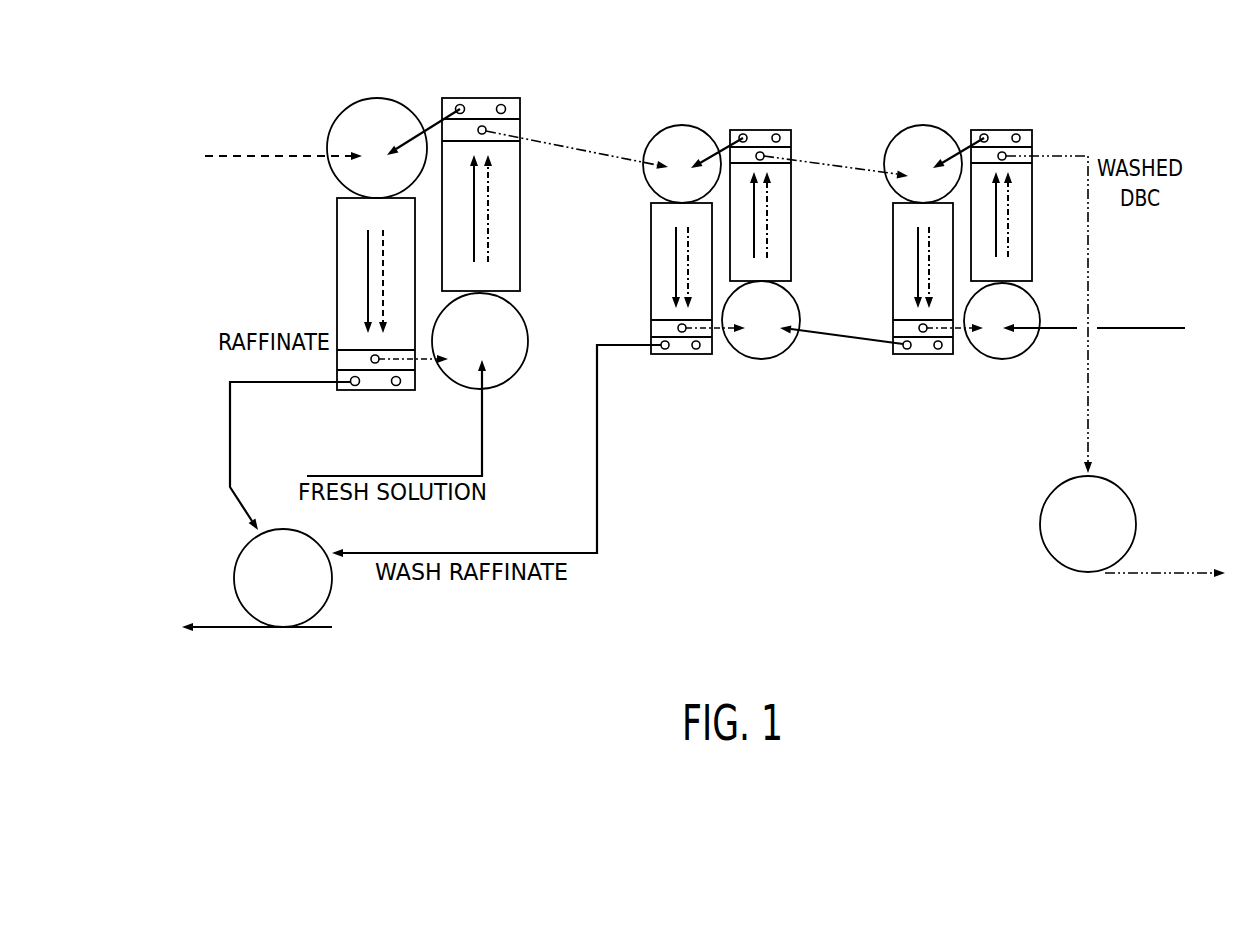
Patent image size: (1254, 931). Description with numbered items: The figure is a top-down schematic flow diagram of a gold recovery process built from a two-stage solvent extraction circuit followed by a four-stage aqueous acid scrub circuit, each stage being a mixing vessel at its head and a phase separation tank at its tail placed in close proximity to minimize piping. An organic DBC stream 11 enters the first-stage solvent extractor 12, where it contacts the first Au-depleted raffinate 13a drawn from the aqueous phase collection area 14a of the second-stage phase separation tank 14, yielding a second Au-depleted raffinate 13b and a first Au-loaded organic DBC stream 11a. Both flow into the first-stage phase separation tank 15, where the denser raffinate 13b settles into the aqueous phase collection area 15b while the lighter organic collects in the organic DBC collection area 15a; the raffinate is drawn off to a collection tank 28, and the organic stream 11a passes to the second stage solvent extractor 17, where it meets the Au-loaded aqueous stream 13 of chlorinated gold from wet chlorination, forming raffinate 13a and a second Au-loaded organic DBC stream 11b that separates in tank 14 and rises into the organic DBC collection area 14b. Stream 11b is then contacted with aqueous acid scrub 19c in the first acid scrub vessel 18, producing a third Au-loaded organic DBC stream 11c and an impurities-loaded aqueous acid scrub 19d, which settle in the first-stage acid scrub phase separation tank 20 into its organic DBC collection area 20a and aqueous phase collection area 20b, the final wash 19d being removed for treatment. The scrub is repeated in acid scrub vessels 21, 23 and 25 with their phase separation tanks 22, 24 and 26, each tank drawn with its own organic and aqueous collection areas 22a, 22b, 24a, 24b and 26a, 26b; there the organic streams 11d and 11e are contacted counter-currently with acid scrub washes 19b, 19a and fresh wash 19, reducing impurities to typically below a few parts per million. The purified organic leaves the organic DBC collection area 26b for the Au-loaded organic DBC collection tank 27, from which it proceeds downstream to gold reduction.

The organic DBC stream 11 is at (248, 155).
The first Au-loaded organic DBC stream 11a is at (382, 302).
The second Au-loaded organic DBC stream 11b is at (548, 141).
The third Au-loaded organic DBC stream 11c is at (687, 290).
The Au-loaded organic DBC stream 11d is at (808, 160).
The Au-loaded organic DBC stream 11e is at (928, 310).
The first-stage solvent extractor 12 is at (352, 103).
The aqueous stream (filtrate) 13 is at (482, 434).
The first Au-depleted raffinate 13a is at (433, 118).
The second Au-depleted raffinate 13b is at (367, 272).
The second-stage phase separation tank 14 is at (521, 170).
The aqueous phase collection area 14a is at (478, 105).
The organic DBC collection area 14b is at (516, 128).
The first-stage phase separation tank 15 is at (337, 220).
The organic DBC collection area 15a is at (372, 390).
The aqueous phase collection area 15b is at (355, 353).
The second stage solvent extractor 17 is at (520, 377).
The first acid scrub vessel 18 is at (681, 125).
The aqueous acid scrub wash 19 is at (1150, 328).
The aqueous acid scrub wash 19a is at (963, 150).
The aqueous acid scrub wash 19b is at (917, 290).
The aqueous acid scrub 19c is at (723, 147).
The impurities-loaded aqueous acid scrub 19d is at (675, 268).
The first-stage acid scrub phase separation tank 20 is at (651, 222).
The organic DBC collection area 20a is at (681, 355).
The aqueous phase collection area 20b is at (651, 328).
The acid scrub vessel 21 is at (762, 358).
The acid scrub phase separation tank 22 is at (792, 186).
The settler outlet 22a is at (758, 135).
The settler outlet 22b is at (791, 151).
The acid scrub vessel 23 is at (921, 125).
The acid scrub phase separation tank 24 is at (893, 232).
The settler outlet 24a is at (922, 355).
The settler outlet 24b is at (893, 328).
The acid scrub vessel 25 is at (1001, 358).
The acid scrub phase separation tank 26 is at (1033, 201).
The settler outlet 26a is at (997, 135).
The organic DBC collection area 26b is at (1032, 150).
The Au-loaded organic DBC collection tank 27 is at (1071, 573).
The raffinate collection vessel 28 is at (241, 555).